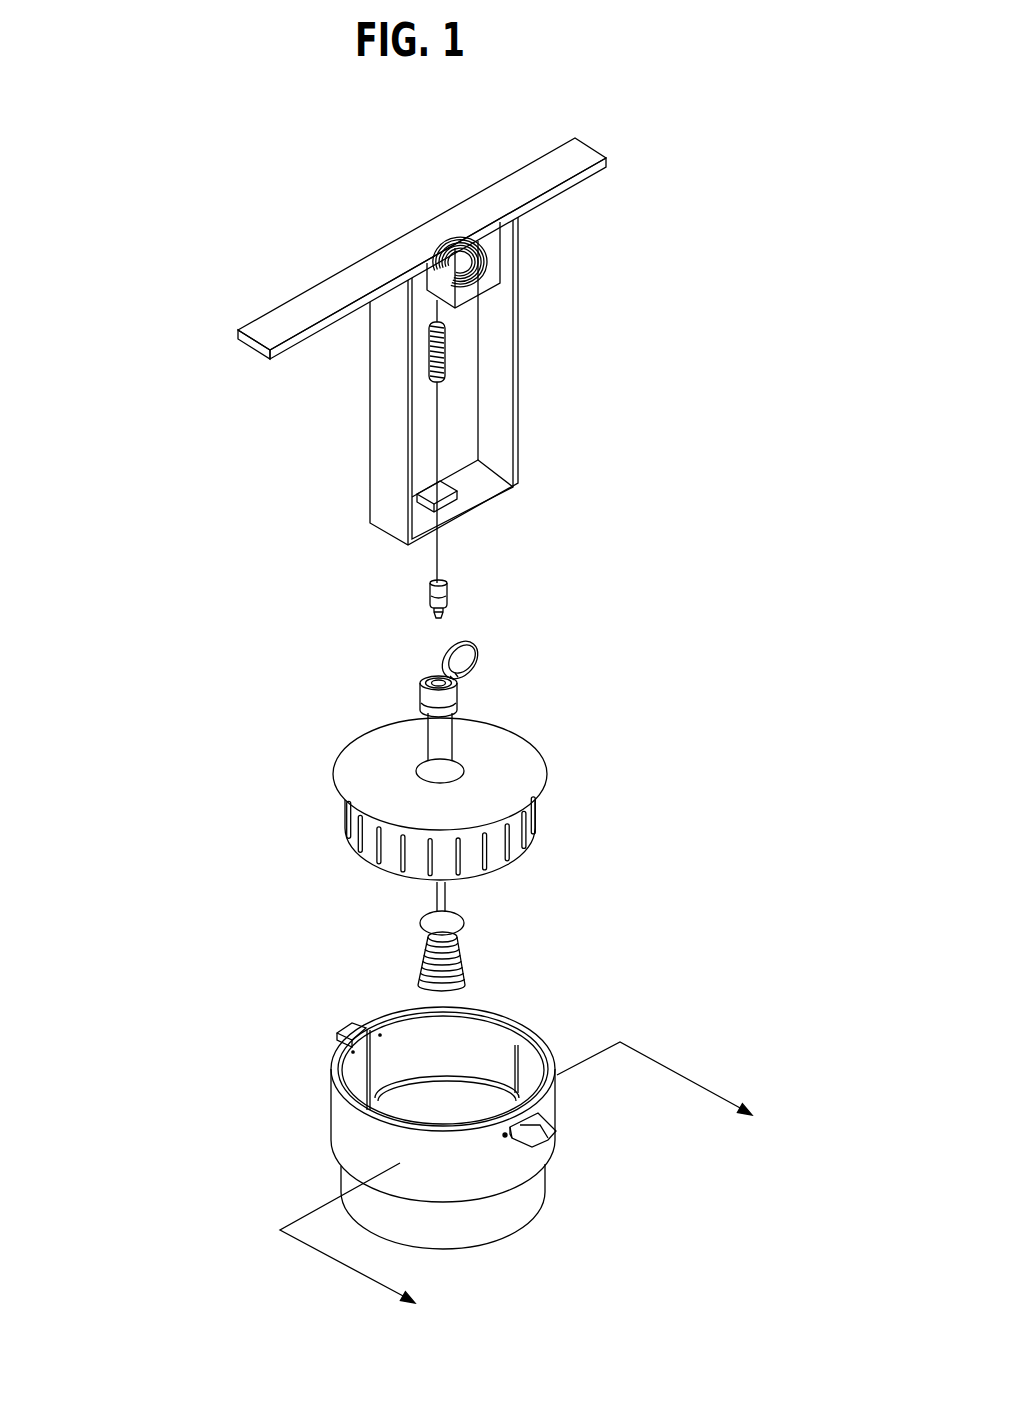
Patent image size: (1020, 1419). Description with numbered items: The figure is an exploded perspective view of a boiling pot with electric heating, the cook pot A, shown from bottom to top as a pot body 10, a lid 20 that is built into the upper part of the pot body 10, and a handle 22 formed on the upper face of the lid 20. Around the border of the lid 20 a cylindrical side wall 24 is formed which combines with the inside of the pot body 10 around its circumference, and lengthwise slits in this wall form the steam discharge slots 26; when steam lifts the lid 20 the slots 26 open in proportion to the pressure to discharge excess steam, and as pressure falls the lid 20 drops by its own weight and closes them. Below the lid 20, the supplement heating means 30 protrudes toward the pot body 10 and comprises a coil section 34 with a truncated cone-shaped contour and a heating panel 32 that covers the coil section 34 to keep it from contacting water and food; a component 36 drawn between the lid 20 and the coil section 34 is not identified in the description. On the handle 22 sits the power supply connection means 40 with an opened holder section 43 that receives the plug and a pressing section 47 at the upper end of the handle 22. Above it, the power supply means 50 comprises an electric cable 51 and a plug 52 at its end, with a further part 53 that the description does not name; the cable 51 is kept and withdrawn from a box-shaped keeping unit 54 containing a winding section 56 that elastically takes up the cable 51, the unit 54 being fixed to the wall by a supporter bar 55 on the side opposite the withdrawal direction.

The cook pot A is at (196, 775).
The pot body 10 is at (522, 1202).
The lid 20 is at (528, 790).
The handle 22 is at (435, 745).
The cylindrical side wall 24 is at (493, 860).
The steam discharge slots 26 is at (528, 826).
The supplement heating means 30 is at (500, 975).
The heating panel 32 is at (419, 977).
The coil section 34 is at (465, 958).
The ring 36 is at (420, 923).
The power supply connection means 40 is at (510, 672).
The opened holder section 43 is at (427, 678).
The pressing section 47 is at (457, 698).
The power supply means 50 is at (560, 518).
The electric cable 51 is at (440, 437).
The plug 52 is at (447, 587).
The connector tip 53 is at (430, 597).
The keeping unit 54 is at (518, 348).
The supporter bar 55 is at (578, 153).
The winding section 56 is at (497, 277).